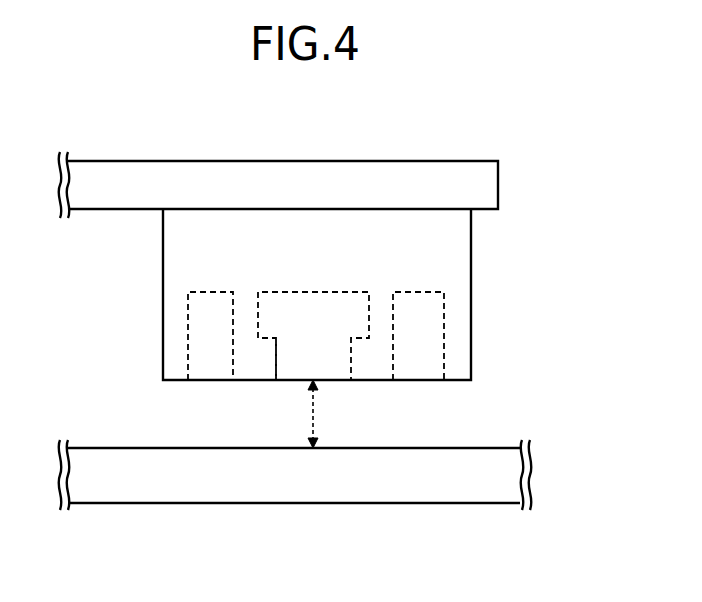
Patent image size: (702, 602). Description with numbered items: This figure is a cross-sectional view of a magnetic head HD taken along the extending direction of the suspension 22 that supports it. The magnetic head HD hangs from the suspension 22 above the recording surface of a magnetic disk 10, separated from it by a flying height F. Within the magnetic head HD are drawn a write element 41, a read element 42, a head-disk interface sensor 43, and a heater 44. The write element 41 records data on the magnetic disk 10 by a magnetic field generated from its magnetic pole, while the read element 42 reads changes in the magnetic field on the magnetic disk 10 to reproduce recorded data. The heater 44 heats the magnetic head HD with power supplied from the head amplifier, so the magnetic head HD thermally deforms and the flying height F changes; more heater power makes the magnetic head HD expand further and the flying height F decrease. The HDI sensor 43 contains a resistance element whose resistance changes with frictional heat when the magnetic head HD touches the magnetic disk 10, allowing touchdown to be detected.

The suspension 22 is at (498, 183).
The magnetic head HD is at (471, 222).
The read element 42 is at (188, 333).
The HDI sensor 43 is at (276, 362).
The heater 44 is at (311, 292).
The write element 41 is at (444, 334).
The flying height F is at (315, 412).
The magnetic disk 10 is at (297, 503).